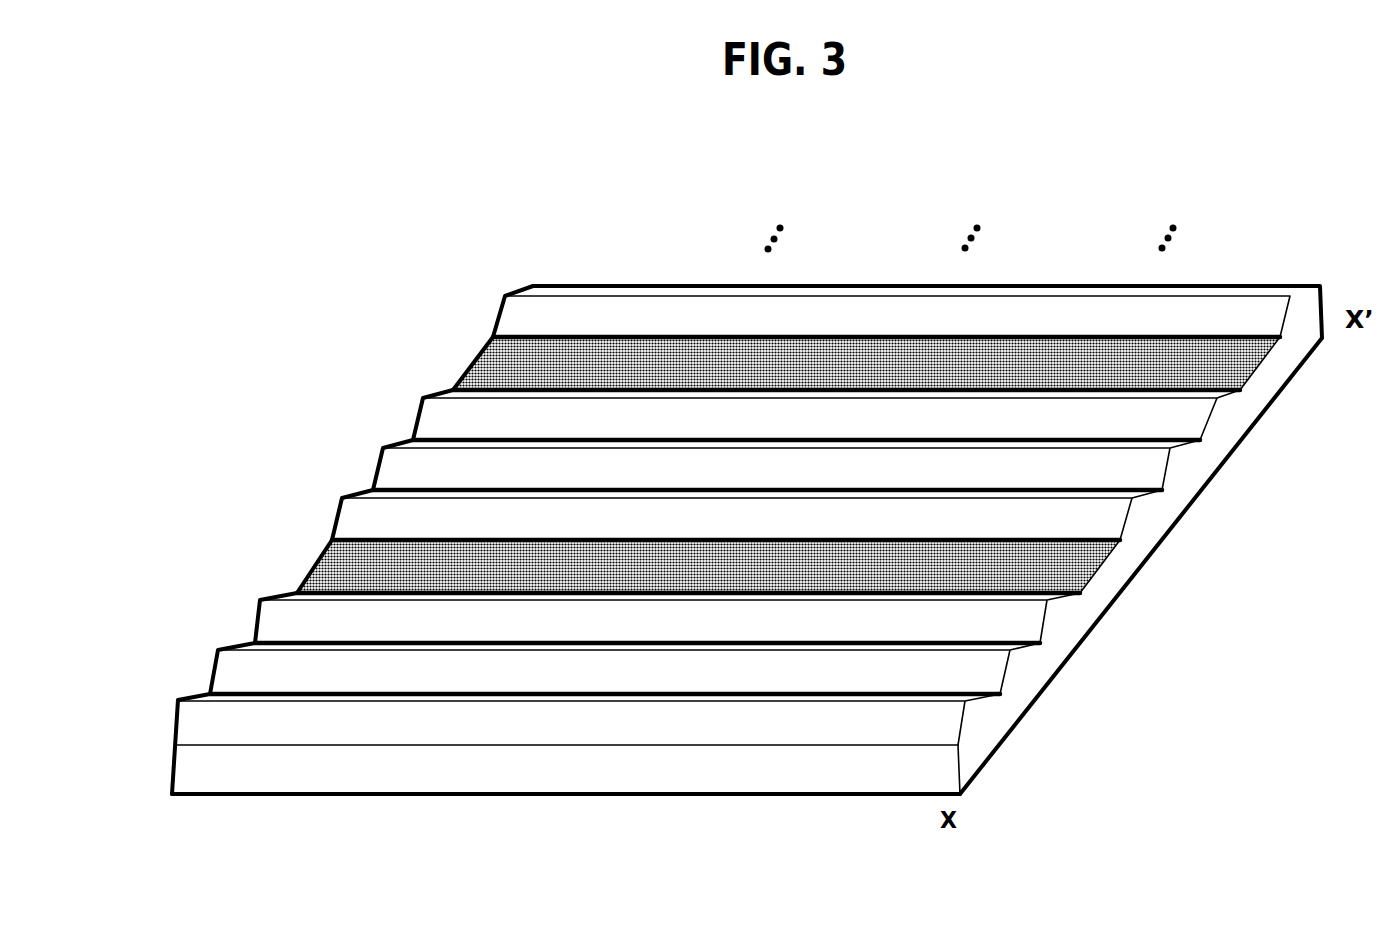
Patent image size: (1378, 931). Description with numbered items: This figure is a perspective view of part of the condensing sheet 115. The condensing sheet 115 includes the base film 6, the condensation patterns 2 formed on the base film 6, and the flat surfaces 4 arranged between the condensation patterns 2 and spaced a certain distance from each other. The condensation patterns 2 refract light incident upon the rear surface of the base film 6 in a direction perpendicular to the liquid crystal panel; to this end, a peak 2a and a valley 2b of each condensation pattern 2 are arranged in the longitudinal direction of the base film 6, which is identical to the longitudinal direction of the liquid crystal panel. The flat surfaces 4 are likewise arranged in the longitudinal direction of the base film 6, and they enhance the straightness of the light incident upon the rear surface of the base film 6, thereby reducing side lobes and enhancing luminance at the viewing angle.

The condensing sheet 115 is at (710, 141).
The condensation patterns 2 is at (293, 396).
The peak 2a is at (382, 448).
The valley 2b is at (375, 488).
The flat surfaces 4 is at (322, 580).
The base film 6 is at (943, 767).